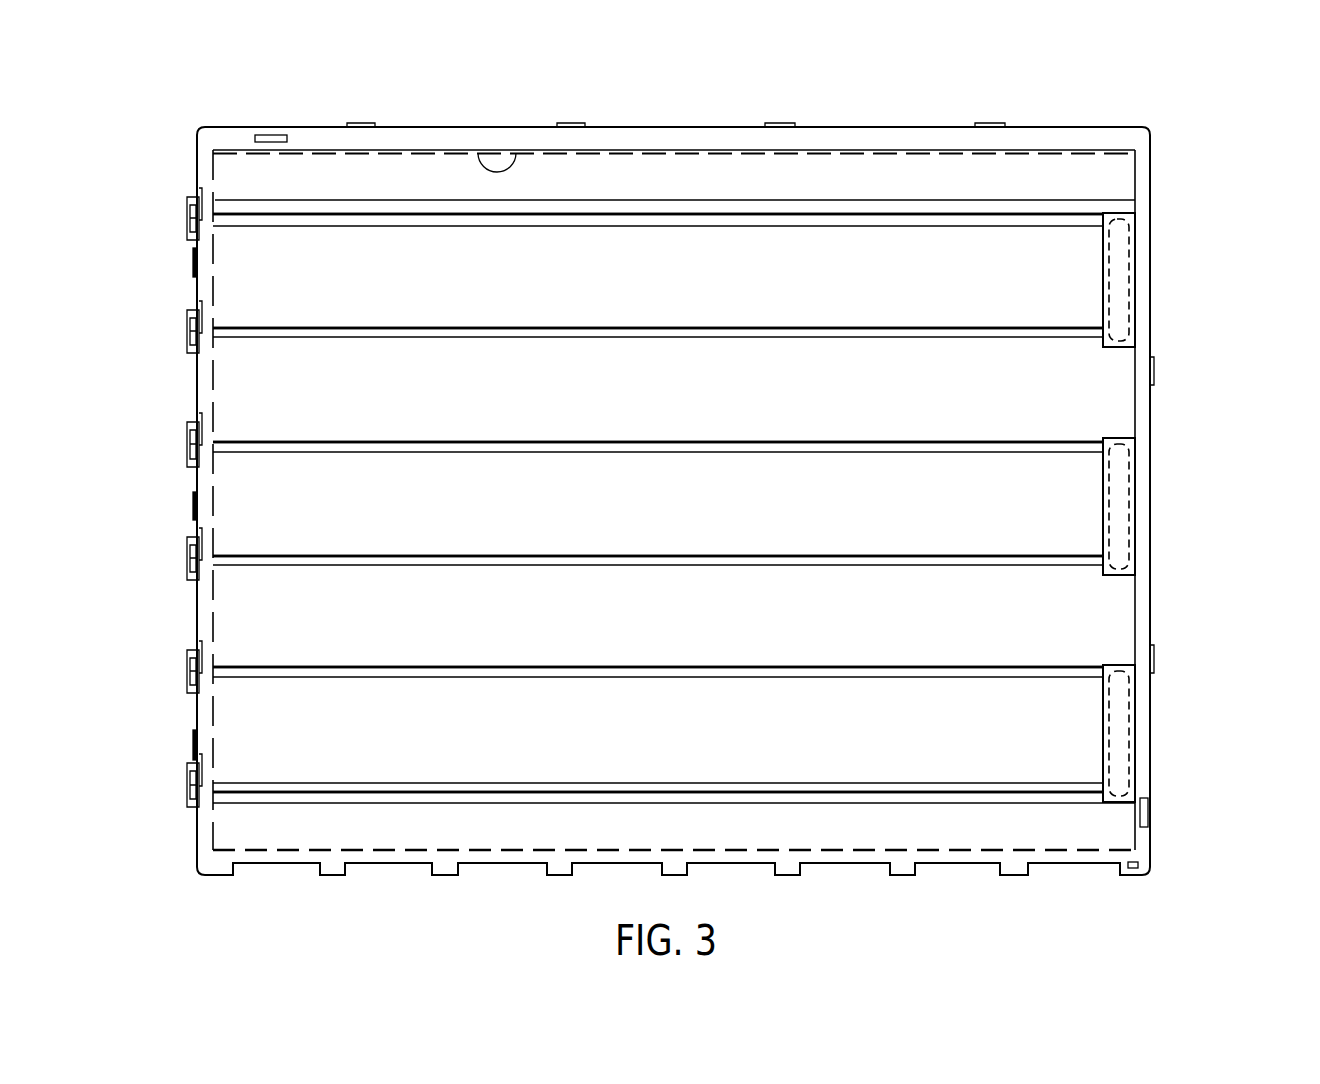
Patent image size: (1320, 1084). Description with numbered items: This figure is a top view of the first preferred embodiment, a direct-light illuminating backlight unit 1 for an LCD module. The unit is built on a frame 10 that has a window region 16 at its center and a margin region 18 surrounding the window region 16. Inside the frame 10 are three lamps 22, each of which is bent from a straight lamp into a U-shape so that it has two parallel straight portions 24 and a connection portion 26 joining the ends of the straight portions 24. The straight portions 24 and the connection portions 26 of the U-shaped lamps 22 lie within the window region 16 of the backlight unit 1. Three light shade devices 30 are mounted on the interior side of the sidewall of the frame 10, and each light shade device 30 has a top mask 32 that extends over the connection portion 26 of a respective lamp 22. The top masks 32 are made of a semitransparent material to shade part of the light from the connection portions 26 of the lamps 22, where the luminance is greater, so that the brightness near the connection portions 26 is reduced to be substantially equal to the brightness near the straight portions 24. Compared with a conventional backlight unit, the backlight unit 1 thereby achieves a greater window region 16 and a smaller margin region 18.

The direct-light illuminating backlight unit 1 is at (1162, 132).
The frame 10 is at (1150, 185).
The window region 16 is at (524, 152).
The margin region 18 is at (428, 142).
The lamp 22 is at (722, 215).
The straight portion 24 is at (287, 214).
The connection portion 26 is at (1130, 258).
The light shade device 30 is at (1113, 292).
The top mask 32 is at (1207, 507).